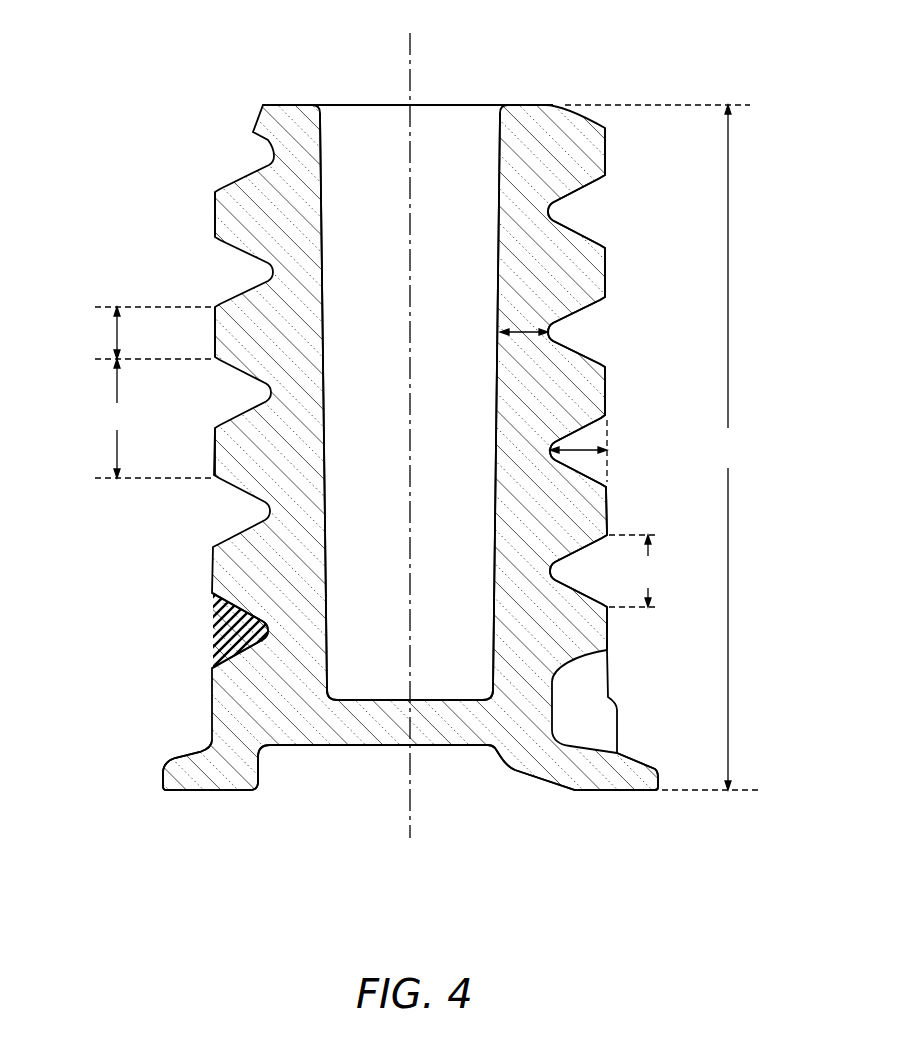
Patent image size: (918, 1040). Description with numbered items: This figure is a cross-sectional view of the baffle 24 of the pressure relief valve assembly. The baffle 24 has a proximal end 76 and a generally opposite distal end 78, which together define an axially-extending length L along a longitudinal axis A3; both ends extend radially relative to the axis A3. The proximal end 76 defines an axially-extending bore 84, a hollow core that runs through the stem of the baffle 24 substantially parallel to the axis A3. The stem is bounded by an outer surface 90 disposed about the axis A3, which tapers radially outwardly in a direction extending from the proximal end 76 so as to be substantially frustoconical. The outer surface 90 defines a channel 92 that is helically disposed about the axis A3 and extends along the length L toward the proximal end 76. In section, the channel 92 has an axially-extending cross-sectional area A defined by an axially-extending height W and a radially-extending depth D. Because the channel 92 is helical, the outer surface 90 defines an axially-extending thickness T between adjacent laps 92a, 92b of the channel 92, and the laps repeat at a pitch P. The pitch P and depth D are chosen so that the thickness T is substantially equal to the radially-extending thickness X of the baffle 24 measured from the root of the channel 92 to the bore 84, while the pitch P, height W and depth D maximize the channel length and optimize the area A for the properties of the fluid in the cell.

The baffle 24 is at (196, 119).
The proximal end 76 is at (281, 104).
The distal end 78 is at (200, 792).
The bore 84 is at (500, 162).
The outer surface 90 is at (215, 213).
The channel 92 is at (587, 240).
The lap of the channel 92a is at (238, 420).
The lap of the channel 92b is at (238, 299).
The cross-sectional area A is at (228, 632).
The longitudinal axis A3 is at (410, 52).
The length L is at (662, 447).
The height of the channel W is at (635, 571).
The depth of the channel D is at (578, 450).
The radially-extending thickness X is at (527, 328).
The axially-extending thickness T is at (117, 335).
The pitch P is at (155, 418).